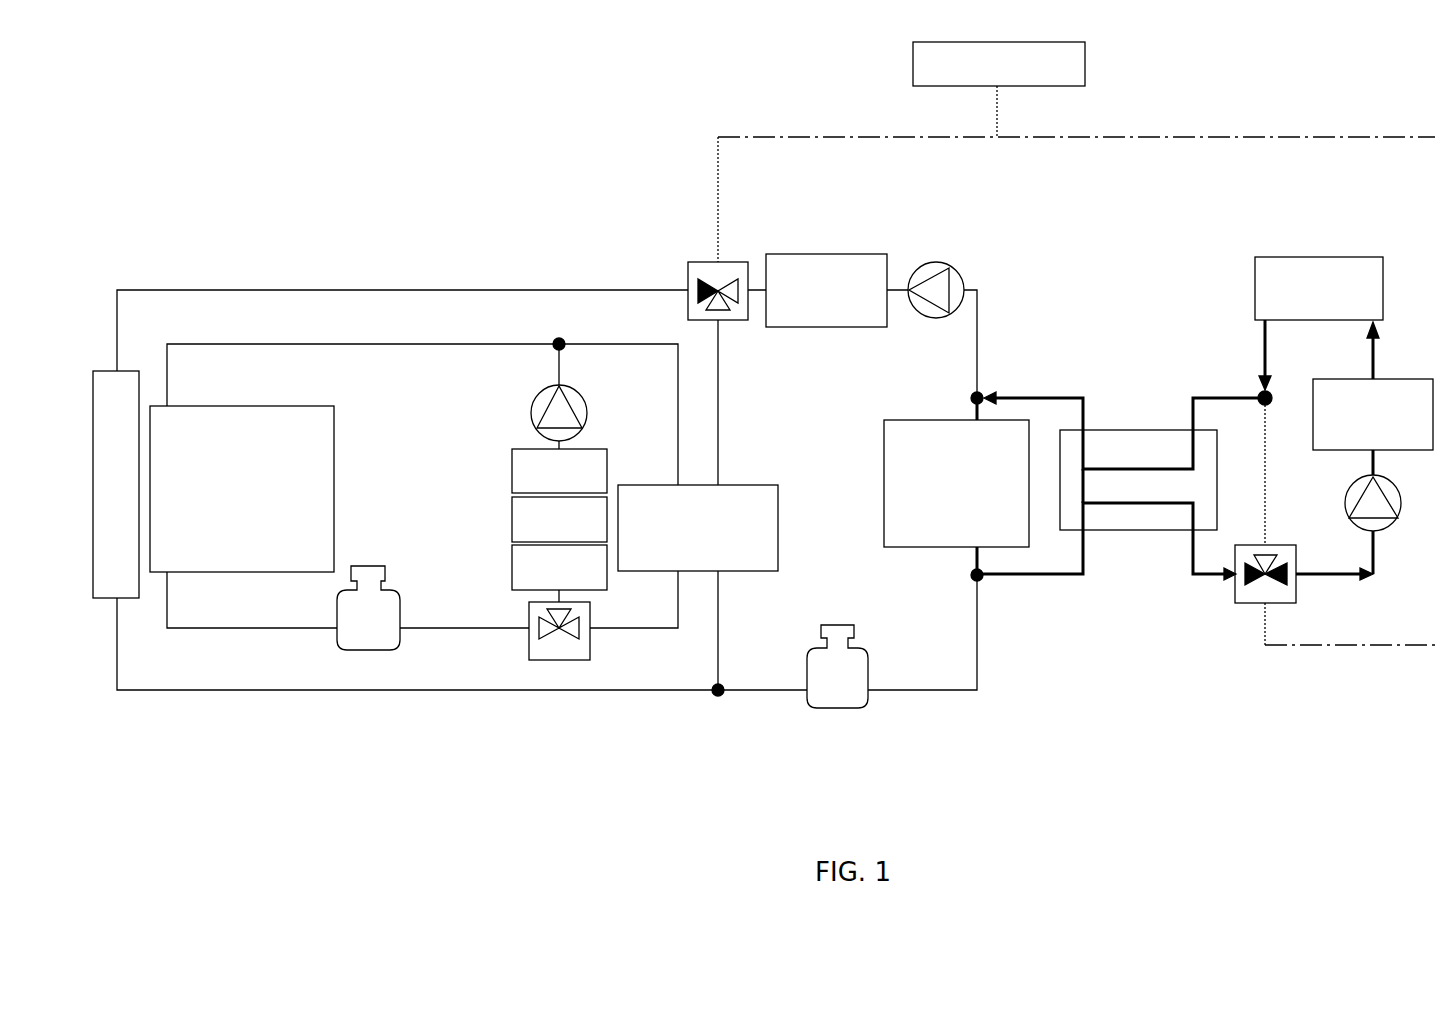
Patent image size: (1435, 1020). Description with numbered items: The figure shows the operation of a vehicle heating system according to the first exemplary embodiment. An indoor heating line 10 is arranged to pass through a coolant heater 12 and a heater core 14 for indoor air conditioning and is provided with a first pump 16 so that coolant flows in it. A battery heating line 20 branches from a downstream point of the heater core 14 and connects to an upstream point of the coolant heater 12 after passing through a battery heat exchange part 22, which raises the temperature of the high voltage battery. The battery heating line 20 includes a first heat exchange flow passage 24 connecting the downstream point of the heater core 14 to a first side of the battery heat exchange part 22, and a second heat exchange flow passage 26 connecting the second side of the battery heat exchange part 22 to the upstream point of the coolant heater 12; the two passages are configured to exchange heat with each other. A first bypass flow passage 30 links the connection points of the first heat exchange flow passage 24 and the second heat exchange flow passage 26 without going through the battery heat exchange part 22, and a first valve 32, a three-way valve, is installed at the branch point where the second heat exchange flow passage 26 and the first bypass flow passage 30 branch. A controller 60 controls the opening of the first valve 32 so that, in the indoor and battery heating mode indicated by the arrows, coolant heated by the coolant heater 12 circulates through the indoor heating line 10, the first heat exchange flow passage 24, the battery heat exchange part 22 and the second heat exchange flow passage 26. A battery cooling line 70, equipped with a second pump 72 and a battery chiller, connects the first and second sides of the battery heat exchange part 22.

The indoor heating line 10 is at (1373, 365).
The coolant heater 12 is at (1393, 379).
The heater core 14 is at (1320, 257).
The first pump 16 is at (1385, 530).
The battery heating line 20 is at (1127, 556).
The battery heat exchange part 22 is at (884, 487).
The first heat exchange flow passage 24 is at (1032, 393).
The second heat exchange flow passage 26 is at (1032, 580).
The first bypass flow passage 30 is at (1265, 527).
The first valve 32 is at (1245, 603).
The controller 60 is at (1088, 68).
The battery cooling line 70 is at (394, 696).
The second pump 72 is at (935, 262).